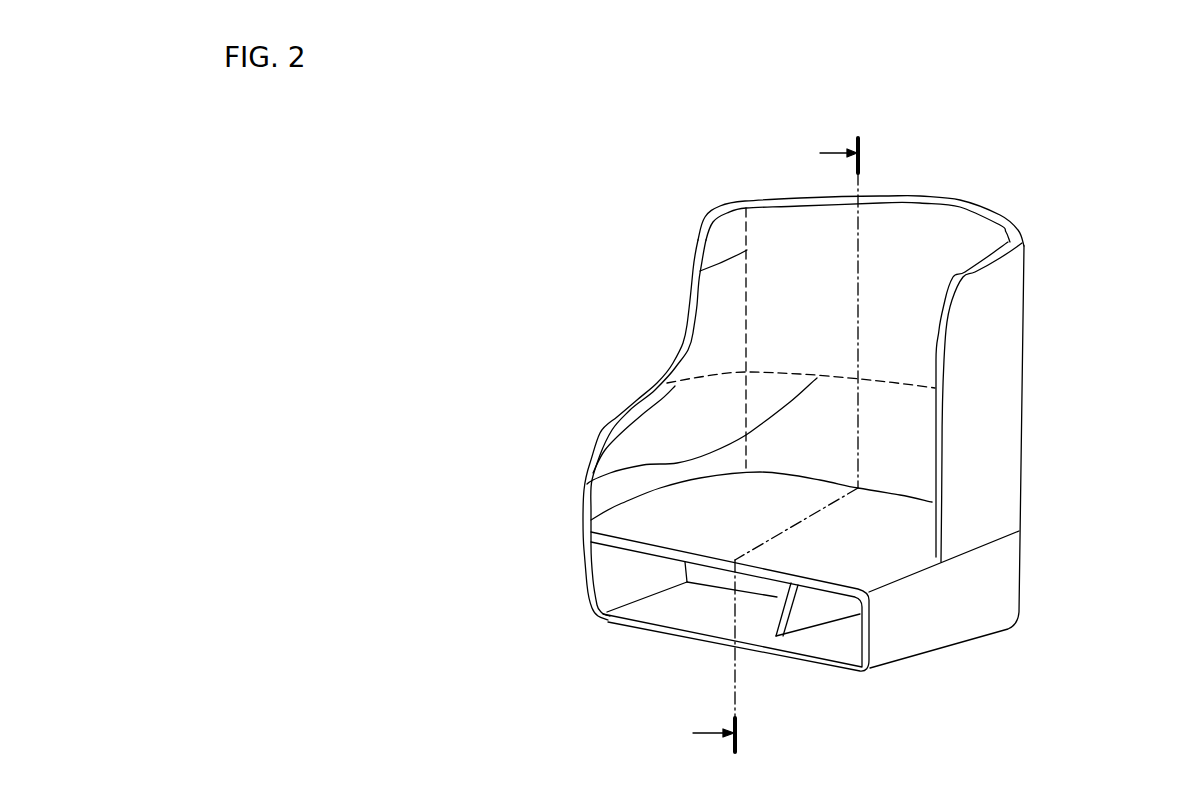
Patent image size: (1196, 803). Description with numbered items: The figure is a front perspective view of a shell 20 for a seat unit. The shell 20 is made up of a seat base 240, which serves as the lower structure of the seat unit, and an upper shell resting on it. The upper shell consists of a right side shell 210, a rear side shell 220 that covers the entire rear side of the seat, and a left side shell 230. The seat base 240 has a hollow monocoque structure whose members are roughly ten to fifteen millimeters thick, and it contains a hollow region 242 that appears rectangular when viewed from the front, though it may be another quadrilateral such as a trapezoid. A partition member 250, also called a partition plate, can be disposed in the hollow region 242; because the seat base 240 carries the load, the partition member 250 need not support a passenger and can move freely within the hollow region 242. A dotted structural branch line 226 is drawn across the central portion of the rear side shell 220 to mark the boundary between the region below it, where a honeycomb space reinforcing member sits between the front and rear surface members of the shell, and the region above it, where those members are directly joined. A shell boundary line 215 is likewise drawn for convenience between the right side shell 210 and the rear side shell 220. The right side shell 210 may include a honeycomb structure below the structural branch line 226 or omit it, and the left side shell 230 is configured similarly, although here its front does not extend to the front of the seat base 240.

The shell 20 is at (1027, 177).
The right side shell 210 is at (683, 338).
The shell boundary line 215 is at (690, 272).
The rear side shell 220 is at (893, 195).
The structural branch line 226 is at (589, 487).
The left side shell 230 is at (990, 380).
The seat base 240 is at (990, 618).
The hollow region 242 is at (677, 597).
The partition member 250 is at (787, 633).